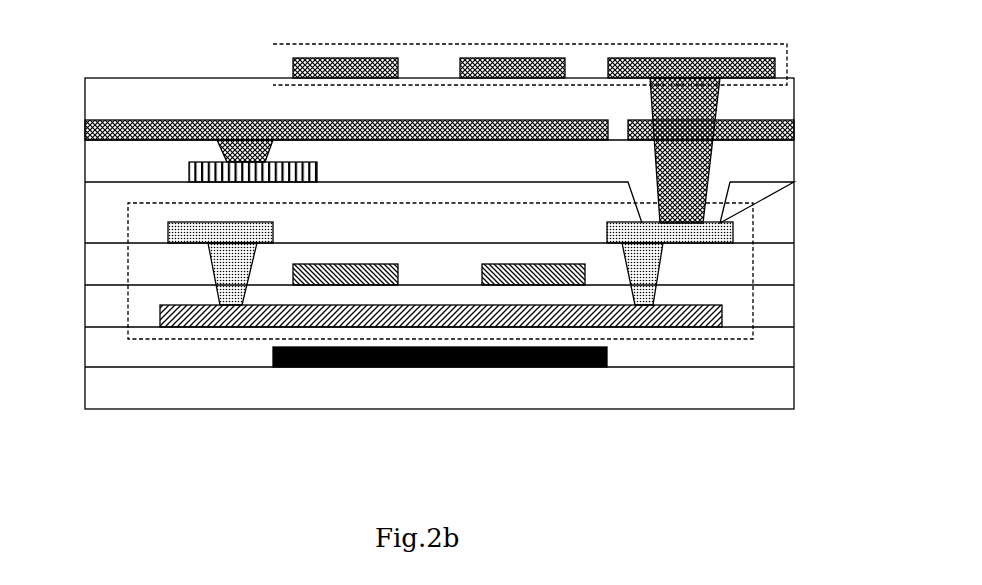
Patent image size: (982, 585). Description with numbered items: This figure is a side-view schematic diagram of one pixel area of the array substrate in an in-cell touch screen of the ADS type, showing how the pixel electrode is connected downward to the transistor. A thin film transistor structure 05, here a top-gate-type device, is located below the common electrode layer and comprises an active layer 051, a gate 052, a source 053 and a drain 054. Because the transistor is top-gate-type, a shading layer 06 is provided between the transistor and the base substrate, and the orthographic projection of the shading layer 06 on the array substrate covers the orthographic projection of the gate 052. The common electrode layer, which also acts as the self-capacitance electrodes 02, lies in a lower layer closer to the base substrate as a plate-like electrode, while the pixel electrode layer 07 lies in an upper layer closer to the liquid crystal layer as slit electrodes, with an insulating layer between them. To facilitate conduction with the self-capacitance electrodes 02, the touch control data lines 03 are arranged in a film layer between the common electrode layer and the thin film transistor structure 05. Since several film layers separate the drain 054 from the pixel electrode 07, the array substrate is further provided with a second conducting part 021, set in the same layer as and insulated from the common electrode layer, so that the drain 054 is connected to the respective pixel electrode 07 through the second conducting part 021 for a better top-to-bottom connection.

The self-capacitance electrodes 02 is at (85, 133).
The second conducting part 021 is at (753, 150).
The touch control data lines 03 is at (189, 168).
The thin film transistor structure 05 is at (753, 228).
The active layer 051 is at (640, 327).
The gate 052 is at (308, 285).
The source 053 is at (190, 243).
The drain 054 is at (733, 243).
The shading layer 06 is at (468, 367).
The pixel electrode layer 07 is at (787, 64).